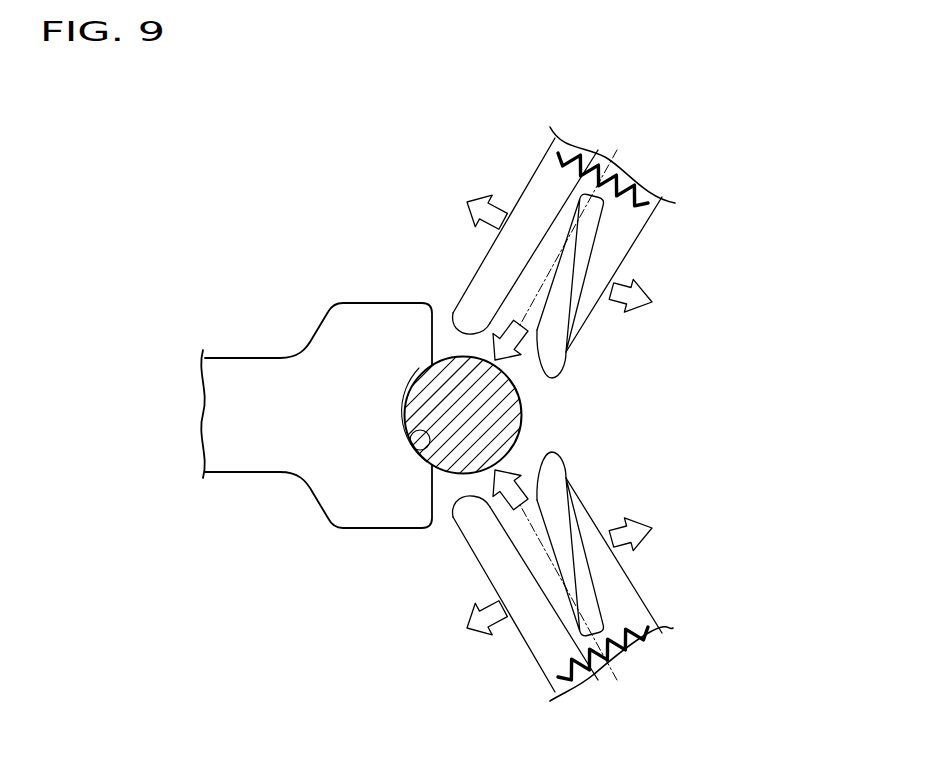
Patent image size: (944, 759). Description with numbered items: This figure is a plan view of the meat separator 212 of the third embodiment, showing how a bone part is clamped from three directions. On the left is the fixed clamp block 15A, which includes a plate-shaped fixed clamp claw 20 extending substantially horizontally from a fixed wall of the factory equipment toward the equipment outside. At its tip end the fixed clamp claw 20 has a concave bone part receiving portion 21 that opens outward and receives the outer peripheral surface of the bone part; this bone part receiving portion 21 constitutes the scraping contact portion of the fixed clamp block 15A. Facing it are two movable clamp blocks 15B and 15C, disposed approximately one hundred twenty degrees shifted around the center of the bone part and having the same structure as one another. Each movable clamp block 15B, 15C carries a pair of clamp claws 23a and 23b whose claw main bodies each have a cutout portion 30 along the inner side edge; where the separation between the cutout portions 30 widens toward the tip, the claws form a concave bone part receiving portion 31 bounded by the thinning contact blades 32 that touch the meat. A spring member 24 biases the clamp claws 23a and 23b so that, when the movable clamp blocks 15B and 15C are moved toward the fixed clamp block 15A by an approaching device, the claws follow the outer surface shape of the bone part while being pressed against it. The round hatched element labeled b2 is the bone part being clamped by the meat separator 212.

The meat separator 212 is at (701, 148).
The fixed clamp block 15A is at (299, 349).
The movable clamp block 15B is at (660, 219).
The movable clamp block 15C is at (646, 594).
The fixed clamp claw 20 is at (316, 439).
The bone part receiving portion 21 is at (419, 451).
The clamp claw 23a is at (629, 266).
The clamp claw 23b is at (524, 193).
The spring member 24 is at (628, 178).
The cutout portion 30 is at (553, 225).
The bone part receiving portion 31 is at (461, 340).
The contact blade 32 is at (492, 325).
The ball b2 is at (524, 428).